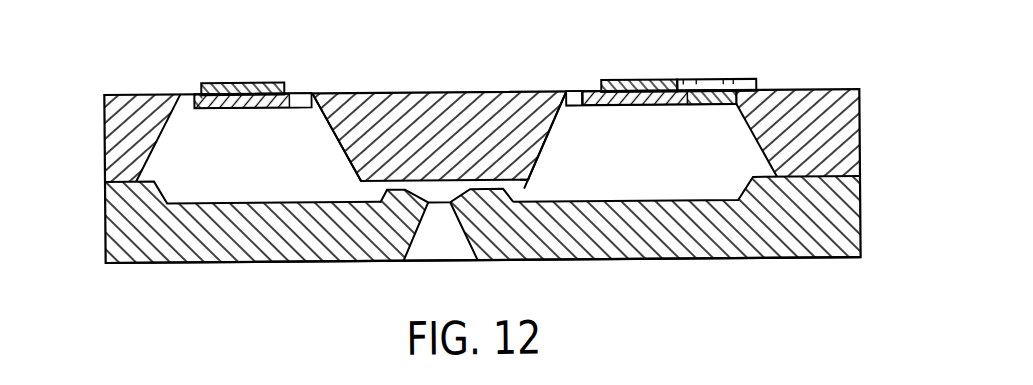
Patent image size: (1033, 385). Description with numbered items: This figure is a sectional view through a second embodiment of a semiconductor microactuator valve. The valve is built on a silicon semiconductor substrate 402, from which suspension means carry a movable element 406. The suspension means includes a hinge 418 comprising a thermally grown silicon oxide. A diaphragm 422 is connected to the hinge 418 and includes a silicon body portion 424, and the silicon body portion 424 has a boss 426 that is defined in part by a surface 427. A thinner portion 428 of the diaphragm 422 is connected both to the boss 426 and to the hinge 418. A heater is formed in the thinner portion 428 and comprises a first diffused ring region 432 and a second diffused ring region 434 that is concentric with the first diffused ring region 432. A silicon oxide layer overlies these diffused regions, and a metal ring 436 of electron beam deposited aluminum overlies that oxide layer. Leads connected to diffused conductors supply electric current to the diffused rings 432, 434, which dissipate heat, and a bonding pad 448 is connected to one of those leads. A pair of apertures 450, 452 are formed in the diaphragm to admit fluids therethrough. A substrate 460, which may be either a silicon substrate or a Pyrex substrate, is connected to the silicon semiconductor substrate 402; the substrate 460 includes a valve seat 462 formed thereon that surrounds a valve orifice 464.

The silicon semiconductor substrate 402 is at (823, 102).
The movable element 406 is at (388, 96).
The hinge 418 is at (191, 95).
The diaphragm 422 is at (470, 97).
The silicon body portion 424 is at (540, 149).
The boss 426 is at (337, 137).
The surface 427 is at (516, 184).
The thinner portion 428 is at (242, 109).
The first diffused ring region 432 is at (214, 109).
The second diffused ring region 434 is at (262, 109).
The metal ring 436 is at (242, 84).
The bonding pad 448 is at (752, 85).
The aperture 450 is at (302, 99).
The aperture 452 is at (582, 95).
The substrate 460 is at (163, 264).
The valve seat 462 is at (480, 193).
The valve orifice 464 is at (460, 265).